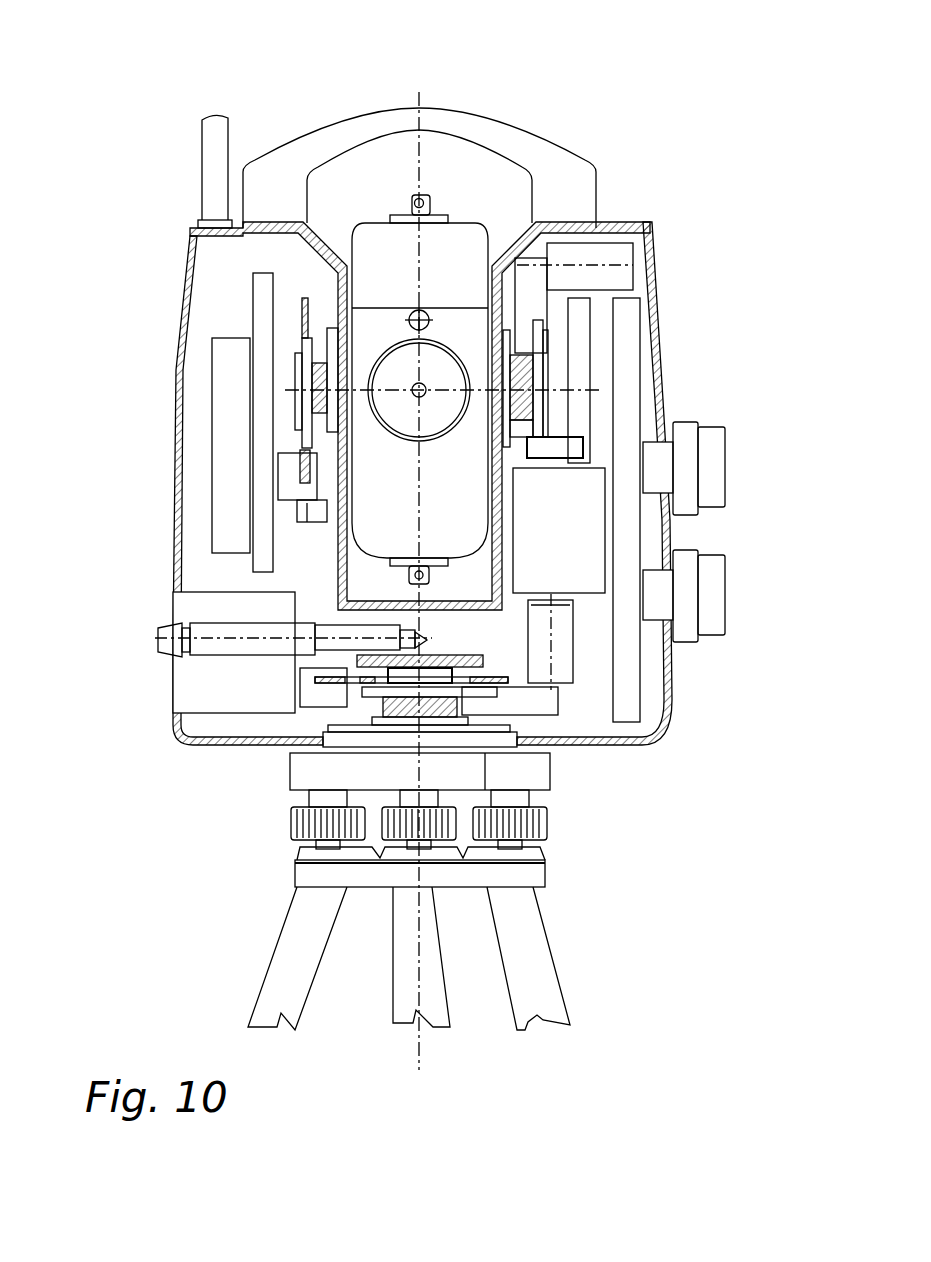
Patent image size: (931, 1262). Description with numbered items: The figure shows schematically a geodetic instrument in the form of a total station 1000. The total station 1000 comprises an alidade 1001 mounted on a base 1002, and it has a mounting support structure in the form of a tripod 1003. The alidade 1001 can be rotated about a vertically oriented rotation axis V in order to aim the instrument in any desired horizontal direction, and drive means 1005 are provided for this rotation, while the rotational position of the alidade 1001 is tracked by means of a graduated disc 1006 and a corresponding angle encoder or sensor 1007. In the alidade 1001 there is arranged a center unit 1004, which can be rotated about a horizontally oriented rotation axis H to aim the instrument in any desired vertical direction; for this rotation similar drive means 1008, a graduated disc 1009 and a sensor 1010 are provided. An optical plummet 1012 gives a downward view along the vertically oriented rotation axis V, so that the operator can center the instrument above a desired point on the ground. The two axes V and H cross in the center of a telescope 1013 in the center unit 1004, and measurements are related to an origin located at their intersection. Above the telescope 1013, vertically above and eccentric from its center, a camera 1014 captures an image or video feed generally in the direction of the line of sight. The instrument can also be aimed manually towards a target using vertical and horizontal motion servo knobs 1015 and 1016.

The total station 1000 is at (690, 134).
The alidade 1001 is at (672, 758).
The base 1002 is at (527, 772).
The tripod 1003 is at (533, 937).
The center unit 1004 is at (460, 257).
The drive means 1005 is at (565, 664).
The graduated disc 1006 is at (360, 683).
The angle encoder or sensor 1007 is at (312, 695).
The drive means 1008 is at (622, 262).
The graduated disc 1009 is at (302, 447).
The sensor 1010 is at (288, 490).
The optical plummet 1012 is at (172, 632).
The telescope 1013 is at (397, 368).
The camera 1014 is at (417, 318).
The vertical motion servo knob 1015 is at (710, 455).
The horizontal motion servo knob 1016 is at (713, 585).
The vertically oriented rotation axis V is at (417, 102).
The horizontally oriented rotation axis H is at (557, 390).